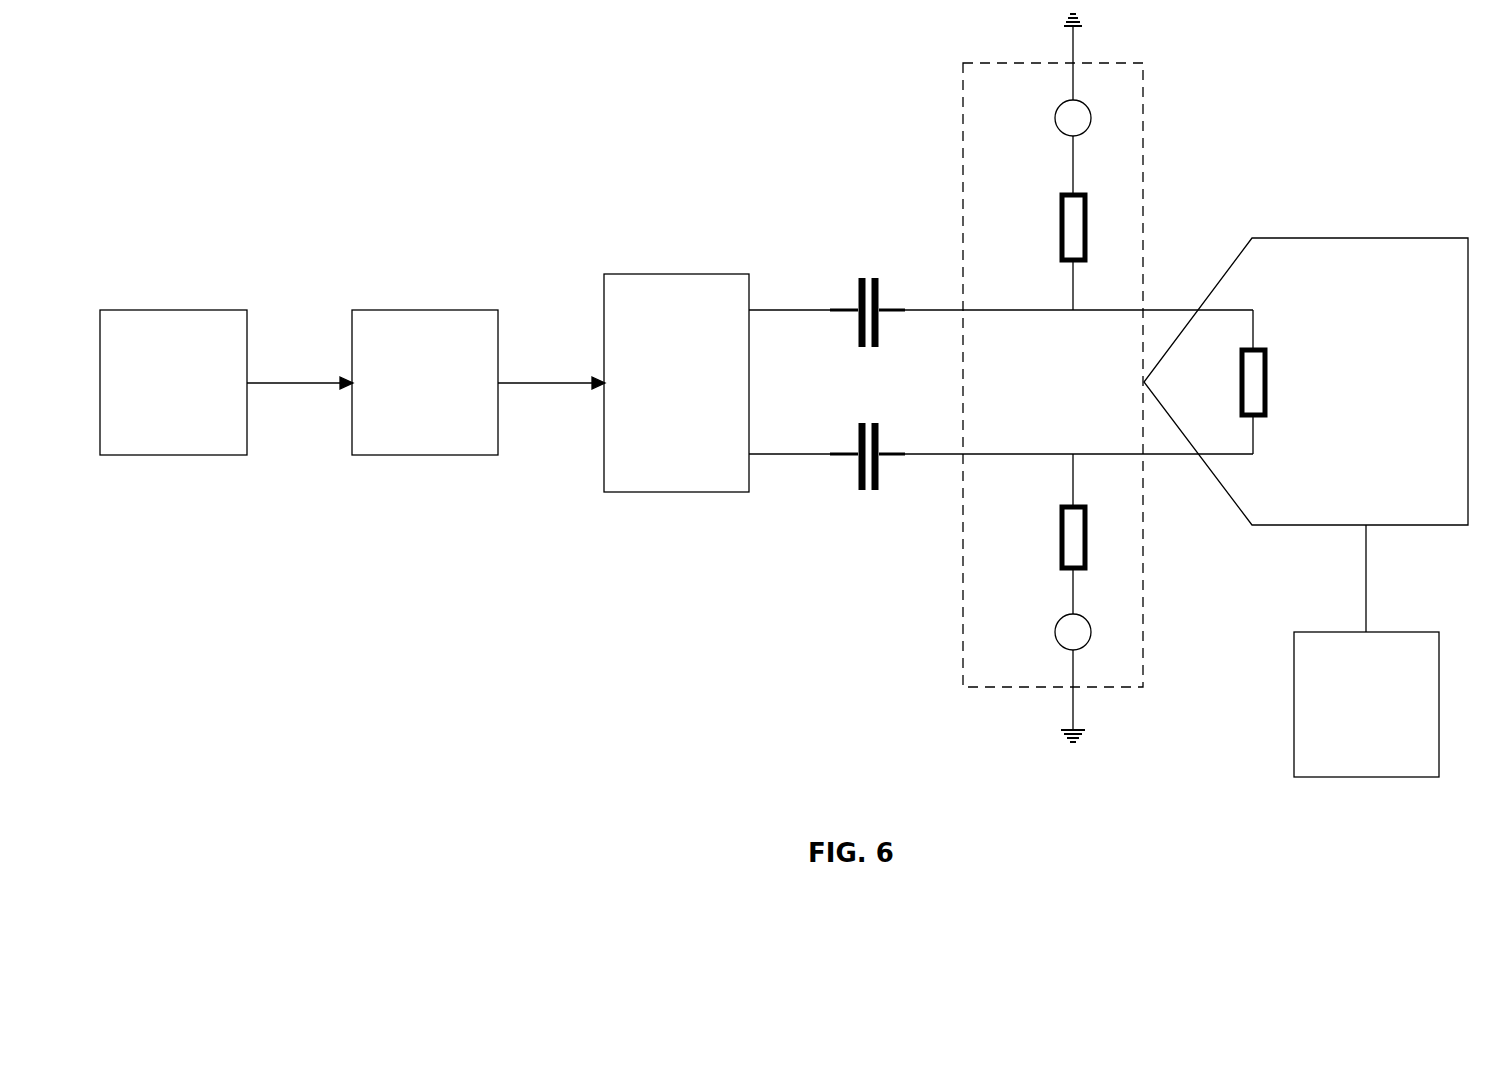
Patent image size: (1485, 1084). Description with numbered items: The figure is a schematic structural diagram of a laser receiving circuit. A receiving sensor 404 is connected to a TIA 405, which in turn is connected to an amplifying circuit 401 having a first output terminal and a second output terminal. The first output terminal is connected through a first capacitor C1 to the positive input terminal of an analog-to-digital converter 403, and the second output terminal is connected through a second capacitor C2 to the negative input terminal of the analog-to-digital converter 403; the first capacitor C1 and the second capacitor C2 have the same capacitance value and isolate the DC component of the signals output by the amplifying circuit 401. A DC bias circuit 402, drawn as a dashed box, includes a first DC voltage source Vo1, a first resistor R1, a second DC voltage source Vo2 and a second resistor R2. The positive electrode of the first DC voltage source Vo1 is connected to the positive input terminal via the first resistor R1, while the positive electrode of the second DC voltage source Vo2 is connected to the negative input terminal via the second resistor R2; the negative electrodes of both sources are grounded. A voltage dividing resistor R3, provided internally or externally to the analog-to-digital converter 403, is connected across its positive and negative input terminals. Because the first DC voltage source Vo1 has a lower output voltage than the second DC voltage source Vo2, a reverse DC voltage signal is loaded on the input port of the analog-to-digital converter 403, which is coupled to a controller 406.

The amplifying circuit 401 is at (676, 383).
The DC bias circuit 402 is at (1143, 195).
The analog-to-digital converter 403 is at (1306, 381).
The receiving sensor 404 is at (173, 382).
The TIA 405 is at (425, 382).
The controller 406 is at (1366, 704).
The first resistor R1 is at (1048, 227).
The second resistor R2 is at (1048, 537).
The voltage dividing resistor R3 is at (1229, 382).
The first capacitor C1 is at (867, 332).
The second capacitor C2 is at (867, 476).
The first DC voltage source Vo1 is at (1095, 118).
The second DC voltage source Vo2 is at (1049, 632).